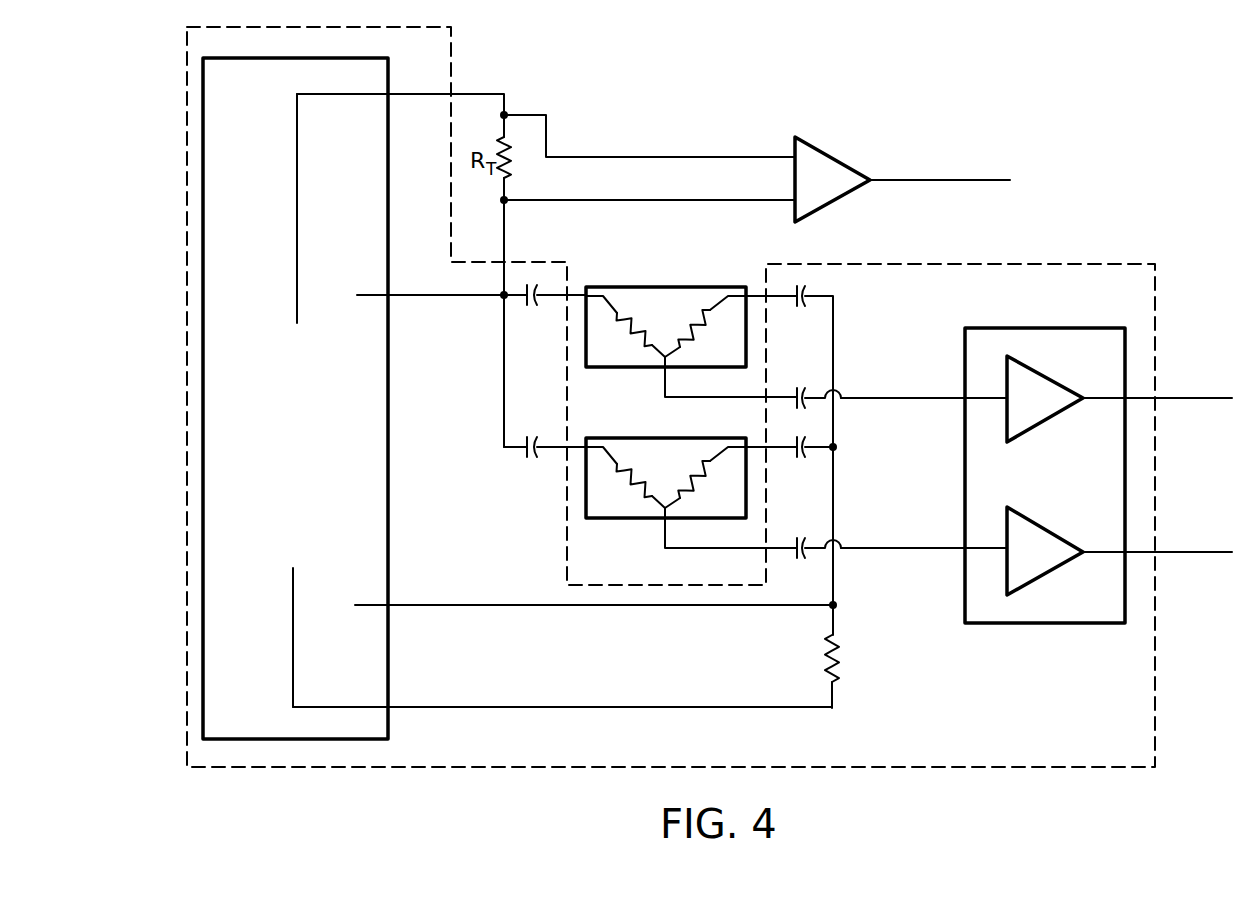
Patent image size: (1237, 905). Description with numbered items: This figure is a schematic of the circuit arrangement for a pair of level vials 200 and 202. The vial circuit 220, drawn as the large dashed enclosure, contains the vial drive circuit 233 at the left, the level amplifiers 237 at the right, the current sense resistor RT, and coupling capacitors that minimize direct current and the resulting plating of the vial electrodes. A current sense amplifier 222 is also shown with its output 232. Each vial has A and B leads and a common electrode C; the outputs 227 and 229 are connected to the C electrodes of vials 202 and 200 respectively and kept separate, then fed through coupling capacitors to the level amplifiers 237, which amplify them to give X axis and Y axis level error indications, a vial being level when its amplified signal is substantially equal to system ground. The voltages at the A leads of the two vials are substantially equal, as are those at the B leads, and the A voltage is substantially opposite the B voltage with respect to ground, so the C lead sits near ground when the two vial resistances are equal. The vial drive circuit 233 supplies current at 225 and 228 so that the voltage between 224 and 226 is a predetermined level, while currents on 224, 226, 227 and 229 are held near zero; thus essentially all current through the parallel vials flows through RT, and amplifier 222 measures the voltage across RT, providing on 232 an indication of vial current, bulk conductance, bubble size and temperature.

The vial 200 is at (697, 438).
The vial 202 is at (713, 287).
The vial circuit 220 is at (882, 768).
The current sense amplifier 222 is at (835, 160).
The lead 224 is at (425, 293).
The lead 225 is at (420, 92).
The lead 226 is at (417, 603).
The output 227 is at (898, 398).
The lead 228 is at (417, 706).
The output 229 is at (898, 548).
The amplifier output 232 is at (957, 182).
The vial drive circuit 233 is at (323, 57).
The level amplifiers 237 is at (1045, 328).